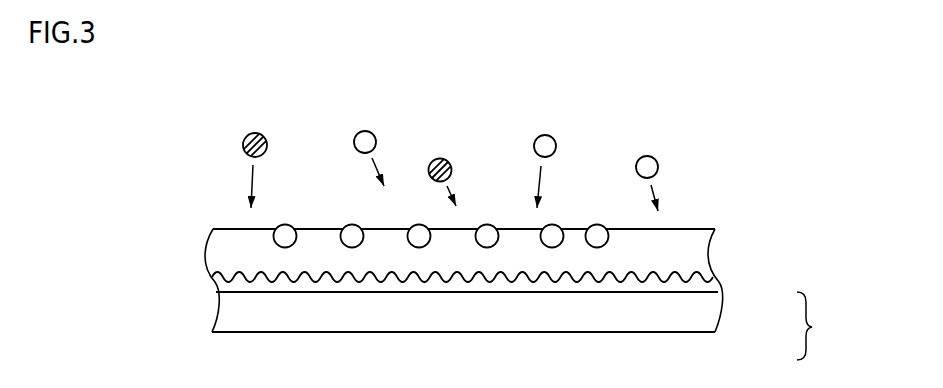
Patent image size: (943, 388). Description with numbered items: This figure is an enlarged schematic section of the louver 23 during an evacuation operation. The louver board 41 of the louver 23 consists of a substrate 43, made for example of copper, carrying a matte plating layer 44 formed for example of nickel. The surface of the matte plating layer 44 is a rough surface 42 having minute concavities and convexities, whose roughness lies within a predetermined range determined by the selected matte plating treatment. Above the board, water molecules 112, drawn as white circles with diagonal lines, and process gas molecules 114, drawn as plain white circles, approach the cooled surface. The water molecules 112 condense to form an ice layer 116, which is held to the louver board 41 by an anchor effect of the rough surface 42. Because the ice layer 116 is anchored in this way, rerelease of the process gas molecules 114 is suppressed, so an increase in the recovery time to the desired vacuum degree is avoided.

The louver 23 is at (121, 183).
The water molecule 112 is at (258, 133).
The process gas molecule 114 is at (289, 224).
The ice layer 116 is at (693, 250).
The rough surface 42 is at (228, 274).
The matte plating layer 44 is at (705, 285).
The substrate 43 is at (705, 315).
The louver board 41 is at (817, 326).